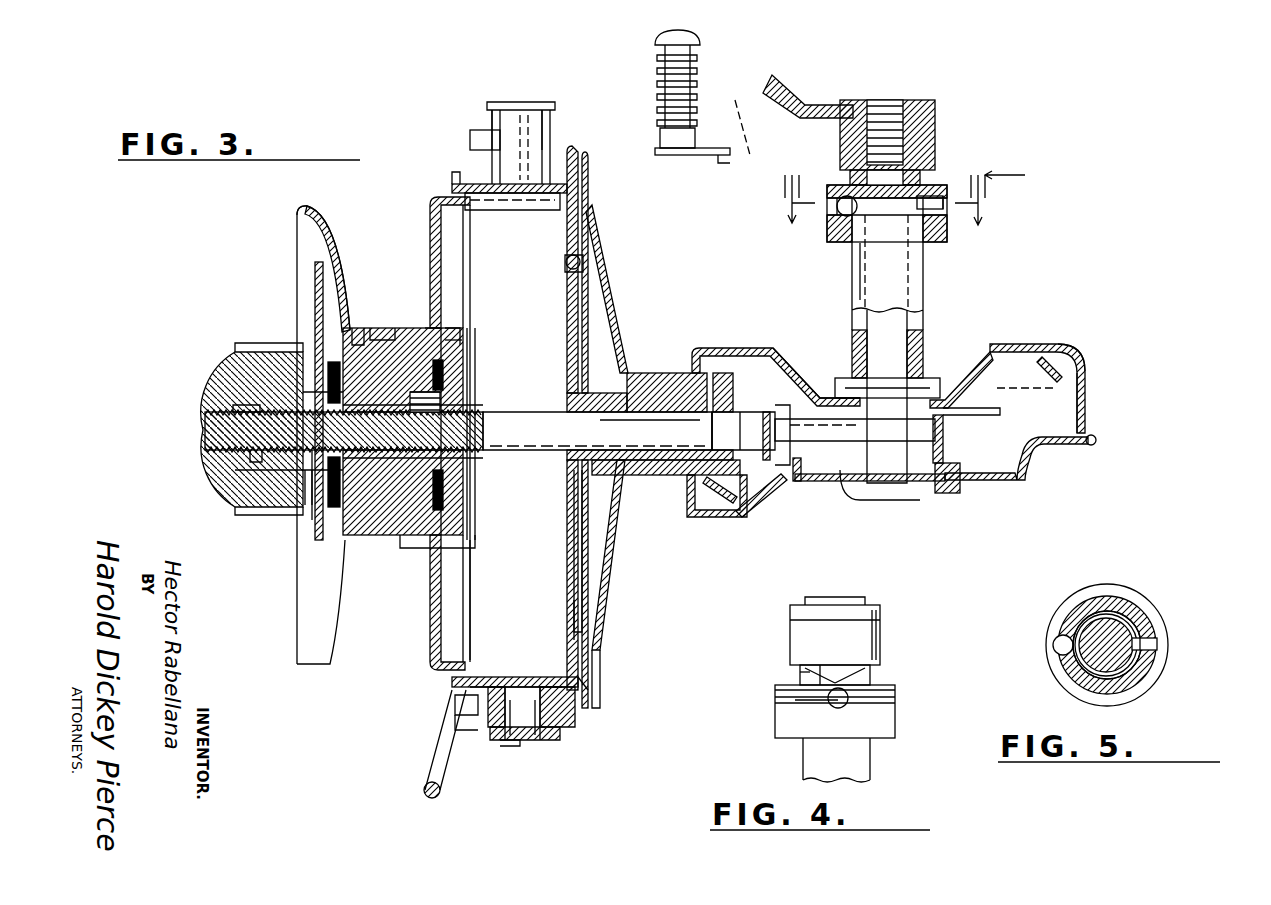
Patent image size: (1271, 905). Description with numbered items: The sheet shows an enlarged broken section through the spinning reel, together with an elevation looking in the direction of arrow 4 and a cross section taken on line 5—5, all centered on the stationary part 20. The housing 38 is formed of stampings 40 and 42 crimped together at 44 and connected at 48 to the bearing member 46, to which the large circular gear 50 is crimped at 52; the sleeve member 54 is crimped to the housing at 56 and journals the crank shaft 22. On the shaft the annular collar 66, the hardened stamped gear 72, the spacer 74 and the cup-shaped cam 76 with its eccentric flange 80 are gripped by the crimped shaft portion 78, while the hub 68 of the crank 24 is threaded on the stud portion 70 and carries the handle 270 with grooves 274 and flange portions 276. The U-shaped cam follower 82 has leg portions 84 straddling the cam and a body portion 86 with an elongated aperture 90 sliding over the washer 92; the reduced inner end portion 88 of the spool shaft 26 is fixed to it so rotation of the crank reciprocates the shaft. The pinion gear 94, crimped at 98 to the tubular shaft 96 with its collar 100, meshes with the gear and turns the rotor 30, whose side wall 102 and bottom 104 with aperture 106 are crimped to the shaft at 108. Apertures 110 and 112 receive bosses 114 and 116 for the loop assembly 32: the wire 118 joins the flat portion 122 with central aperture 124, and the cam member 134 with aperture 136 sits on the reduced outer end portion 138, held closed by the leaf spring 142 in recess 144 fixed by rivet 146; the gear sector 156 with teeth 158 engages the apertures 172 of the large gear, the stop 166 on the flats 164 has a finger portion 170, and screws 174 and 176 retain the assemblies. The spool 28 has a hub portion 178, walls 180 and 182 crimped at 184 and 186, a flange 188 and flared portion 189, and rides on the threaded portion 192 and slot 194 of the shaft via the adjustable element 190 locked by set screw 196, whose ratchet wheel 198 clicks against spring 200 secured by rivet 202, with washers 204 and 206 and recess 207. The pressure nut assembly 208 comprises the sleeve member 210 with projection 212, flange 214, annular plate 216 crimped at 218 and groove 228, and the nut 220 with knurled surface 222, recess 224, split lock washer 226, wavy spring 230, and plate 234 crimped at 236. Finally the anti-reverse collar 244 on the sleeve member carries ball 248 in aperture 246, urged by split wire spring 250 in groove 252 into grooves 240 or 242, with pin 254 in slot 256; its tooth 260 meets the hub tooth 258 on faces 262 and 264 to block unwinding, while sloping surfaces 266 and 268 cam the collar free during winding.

In FIG. 3, the arrow 4 is at (1005, 161).
In FIG. 3, the line 5— 5 is at (882, 200).
In FIG. 3, the stationary part 20 is at (1026, 334).
In FIG. 3, the crank shaft 22 is at (897, 333).
In FIG. 5, the crank shaft 22 is at (1110, 618).
In FIG. 3, the crank 24 is at (768, 82).
In FIG. 4, the crank 24 is at (795, 608).
In FIG. 3, the spool shaft 26 is at (562, 440).
In FIG. 3, the spool 28 is at (293, 667).
In FIG. 3, the rotor 30 is at (459, 173).
In FIG. 3, the loop assembly 32 is at (413, 790).
In FIG. 3, the housing 38 is at (1083, 361).
In FIG. 3, the housing stamping 40 is at (1087, 402).
In FIG. 3, the housing stamping 42 is at (1022, 481).
In FIG. 3, the crimp 44 is at (1094, 446).
In FIG. 3, the bearing member 46 is at (615, 492).
In FIG. 3, the rotatable connection 48 is at (687, 372).
In FIG. 3, the large circular gear 50 is at (612, 300).
In FIG. 3, the crimp 52 is at (630, 380).
In FIG. 3, the sleeve member 54 is at (925, 302).
In FIG. 4, the sleeve member 54 is at (803, 764).
In FIG. 5, the sleeve member 54 is at (1095, 612).
In FIG. 3, the crimp 56 is at (946, 356).
In FIG. 3, the annular collar 66 is at (885, 378).
In FIG. 3, the hub 68 is at (936, 128).
In FIG. 4, the hub 68 is at (882, 637).
In FIG. 3, the stud portion 70 is at (900, 102).
In FIG. 3, the gear 72 is at (760, 352).
In FIG. 3, the spacer 74 is at (962, 408).
In FIG. 3, the cam 76 is at (782, 412).
In FIG. 3, the crimped shaft portion 78 is at (825, 435).
In FIG. 3, the annular flange 80 is at (855, 432).
In FIG. 3, the cam follower 82 is at (958, 492).
In FIG. 3, the leg portions 84 is at (762, 420).
In FIG. 3, the body portion 86 is at (800, 484).
In FIG. 3, the reduced inner end portion 88 is at (762, 440).
In FIG. 3, the elongated aperture 90 is at (830, 484).
In FIG. 3, the washer 92 is at (935, 502).
In FIG. 3, the pinion gear 94 is at (705, 522).
In FIG. 3, the tubular shaft 96 is at (652, 436).
In FIG. 3, the crimp 98 is at (762, 522).
In FIG. 3, the collar 100 is at (576, 500).
In FIG. 3, the cylindrical side wall 102 is at (520, 603).
In FIG. 3, the rotor bottom 104 is at (573, 622).
In FIG. 3, the aperture 106 is at (567, 400).
In FIG. 3, the crimp 108 is at (592, 467).
In FIG. 3, the aperture 110 is at (512, 213).
In FIG. 3, the aperture 112 is at (505, 676).
In FIG. 3, the boss 114 is at (512, 209).
In FIG. 3, the boss 116 is at (522, 676).
In FIG. 3, the wire 118 is at (430, 742).
In FIG. 3, the flat portion 122 is at (575, 702).
In FIG. 3, the central aperture 124 is at (522, 742).
In FIG. 3, the cam member 134 is at (487, 135).
In FIG. 3, the aperture 136 is at (550, 105).
In FIG. 3, the reduced outer end portion 138 is at (488, 125).
In FIG. 3, the leaf spring 142 is at (573, 148).
In FIG. 3, the recess 144 is at (584, 274).
In FIG. 3, the rivet 146 is at (565, 268).
In FIG. 3, the gear sector 156 is at (591, 682).
In FIG. 3, the gear teeth 158 is at (455, 700).
In FIG. 3, the flats 164 is at (490, 730).
In FIG. 3, the stop 166 is at (562, 722).
In FIG. 3, the finger portion 170 is at (455, 714).
In FIG. 3, the apertures 172 is at (590, 182).
In FIG. 3, the screw 174 is at (505, 102).
In FIG. 3, the screw 176 is at (510, 746).
In FIG. 3, the hub portion 178 is at (385, 328).
In FIG. 3, the axially inner wall 180 is at (428, 252).
In FIG. 3, the axially outer wall 182 is at (340, 234).
In FIG. 3, the crimp 184 is at (456, 332).
In FIG. 3, the crimp 186 is at (360, 326).
In FIG. 3, the flange 188 is at (470, 565).
In FIG. 3, the flared portion 189 is at (297, 212).
In FIG. 3, the adjustable element 190 is at (470, 398).
In FIG. 3, the threaded portion 192 is at (410, 506).
In FIG. 3, the slot 194 is at (232, 413).
In FIG. 3, the set screw 196 is at (410, 385).
In FIG. 3, the ratchet wheel 198 is at (464, 342).
In FIG. 3, the spring 200 is at (472, 252).
In FIG. 3, the rivet 202 is at (428, 220).
In FIG. 3, the washer 204 is at (430, 326).
In FIG. 3, the washer 206 is at (360, 545).
In FIG. 3, the recess 207 is at (455, 460).
In FIG. 3, the pressure nut assembly 208 is at (208, 385).
In FIG. 3, the sleeve member 210 is at (250, 372).
In FIG. 3, the projection 212 is at (300, 440).
In FIG. 3, the flange 214 is at (345, 358).
In FIG. 3, the annular plate 216 is at (315, 295).
In FIG. 3, the crimp 218 is at (312, 520).
In FIG. 3, the nut 220 is at (240, 481).
In FIG. 3, the knurled surface 222 is at (252, 516).
In FIG. 3, the recess 224 is at (248, 457).
In FIG. 3, the split lock washer 226 is at (305, 500).
In FIG. 3, the annular groove 228 is at (312, 500).
In FIG. 3, the wavy spring 230 is at (330, 335).
In FIG. 3, the annular plate 234 is at (335, 355).
In FIG. 3, the crimp 236 is at (333, 345).
In FIG. 3, the annular groove 240 is at (860, 252).
In FIG. 3, the annular groove 242 is at (890, 252).
In FIG. 3, the collar 244 is at (845, 245).
In FIG. 4, the collar 244 is at (896, 714).
In FIG. 5, the collar 244 is at (1145, 602).
In FIG. 3, the aperture 246 is at (838, 222).
In FIG. 5, the aperture 246 is at (1062, 652).
In FIG. 3, the ball 248 is at (842, 196).
In FIG. 5, the ball 248 is at (1053, 645).
In FIG. 3, the split wire spring 250 is at (940, 237).
In FIG. 4, the split wire spring 250 is at (775, 698).
In FIG. 5, the split wire spring 250 is at (1058, 665).
In FIG. 5, the annular groove 252 is at (1160, 661).
In FIG. 3, the pin 254 is at (912, 204).
In FIG. 4, the pin 254 is at (795, 702).
In FIG. 5, the pin 254 is at (1160, 640).
In FIG. 3, the slot 256 is at (940, 214).
In FIG. 5, the slot 256 is at (1158, 645).
In FIG. 3, the tooth 258 is at (935, 175).
In FIG. 4, the tooth 258 is at (872, 677).
In FIG. 4, the tooth 260 is at (800, 674).
In FIG. 4, the face 262 is at (838, 668).
In FIG. 4, the face 264 is at (838, 710).
In FIG. 4, the sloping surface 266 is at (870, 690).
In FIG. 4, the sloping surface 268 is at (820, 666).
In FIG. 3, the handle 270 is at (655, 45).
In FIG. 3, the grooves 274 is at (698, 112).
In FIG. 3, the flange portions 276 is at (700, 62).